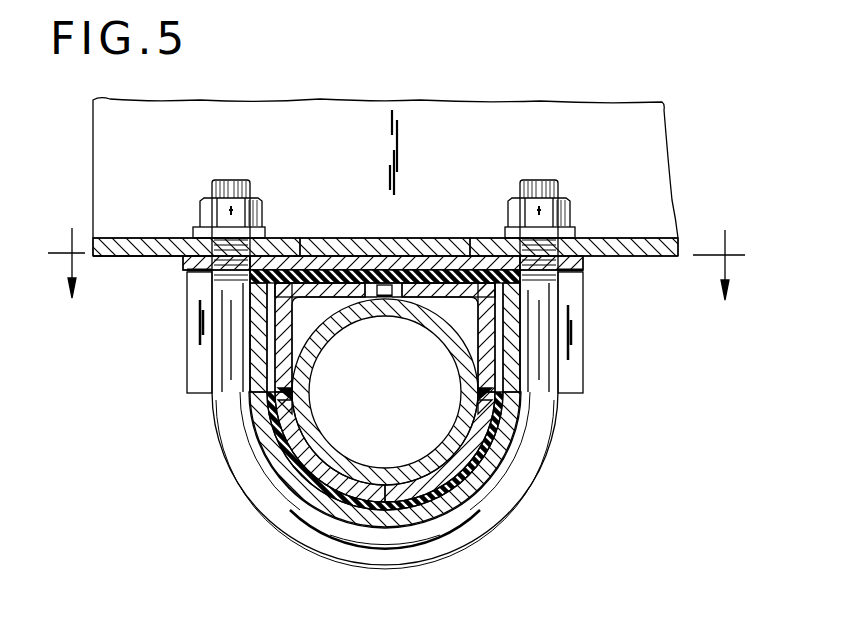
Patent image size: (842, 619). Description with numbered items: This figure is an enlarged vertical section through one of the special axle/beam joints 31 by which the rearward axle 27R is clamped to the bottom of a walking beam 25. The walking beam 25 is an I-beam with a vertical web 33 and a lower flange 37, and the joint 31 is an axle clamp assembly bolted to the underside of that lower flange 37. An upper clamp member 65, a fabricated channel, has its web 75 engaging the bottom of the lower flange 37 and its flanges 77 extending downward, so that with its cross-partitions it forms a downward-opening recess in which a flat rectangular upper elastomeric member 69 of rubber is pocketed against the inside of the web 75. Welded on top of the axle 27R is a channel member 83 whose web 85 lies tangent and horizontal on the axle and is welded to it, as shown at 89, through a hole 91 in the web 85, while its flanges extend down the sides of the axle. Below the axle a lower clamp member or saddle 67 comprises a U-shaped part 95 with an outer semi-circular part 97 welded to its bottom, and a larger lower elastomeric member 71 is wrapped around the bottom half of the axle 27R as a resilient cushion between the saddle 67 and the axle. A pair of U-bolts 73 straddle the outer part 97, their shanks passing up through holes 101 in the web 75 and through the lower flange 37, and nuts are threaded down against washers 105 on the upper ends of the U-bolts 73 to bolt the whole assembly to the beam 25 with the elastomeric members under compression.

The walking beam 25 is at (658, 95).
The web 33 is at (480, 128).
The upper elastomeric member 69 is at (218, 228).
The channel member 83 is at (391, 227).
The holes 101 is at (574, 232).
The lower flange 37 is at (118, 257).
The upper clamp member 65 is at (186, 268).
The web 75 is at (585, 262).
The flanges 77 is at (578, 300).
The U-bolt 73 is at (538, 458).
The rearward axle 27R is at (330, 520).
The lower elastomeric member 71 is at (276, 488).
The semi-circular part 97 is at (490, 470).
The web 85 is at (452, 298).
The weld 89 is at (386, 298).
The hole 91 is at (384, 284).
The U-shaped part 95 is at (412, 512).
The lower clamp member 67 is at (462, 505).
The special joint 31 is at (386, 383).
The washers 105 is at (193, 231).